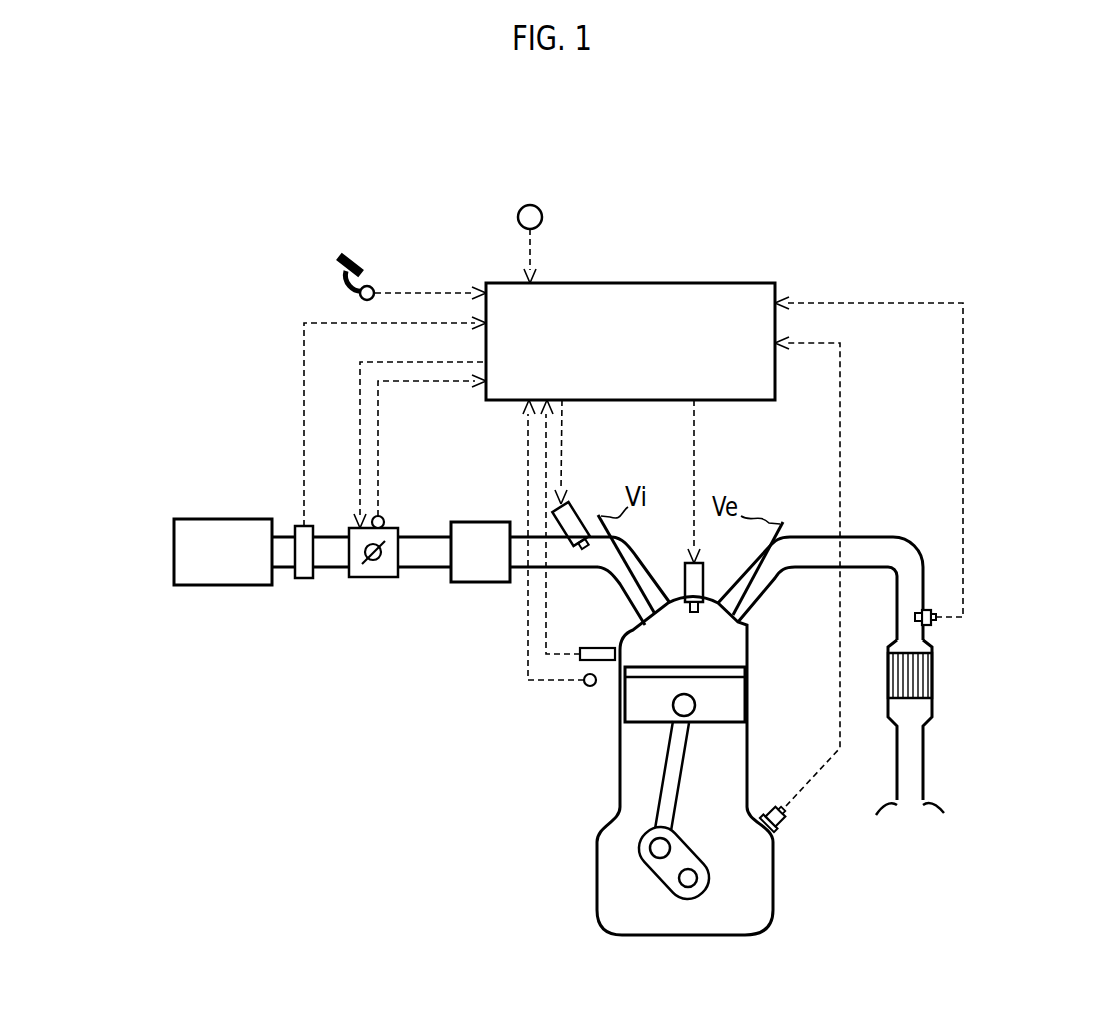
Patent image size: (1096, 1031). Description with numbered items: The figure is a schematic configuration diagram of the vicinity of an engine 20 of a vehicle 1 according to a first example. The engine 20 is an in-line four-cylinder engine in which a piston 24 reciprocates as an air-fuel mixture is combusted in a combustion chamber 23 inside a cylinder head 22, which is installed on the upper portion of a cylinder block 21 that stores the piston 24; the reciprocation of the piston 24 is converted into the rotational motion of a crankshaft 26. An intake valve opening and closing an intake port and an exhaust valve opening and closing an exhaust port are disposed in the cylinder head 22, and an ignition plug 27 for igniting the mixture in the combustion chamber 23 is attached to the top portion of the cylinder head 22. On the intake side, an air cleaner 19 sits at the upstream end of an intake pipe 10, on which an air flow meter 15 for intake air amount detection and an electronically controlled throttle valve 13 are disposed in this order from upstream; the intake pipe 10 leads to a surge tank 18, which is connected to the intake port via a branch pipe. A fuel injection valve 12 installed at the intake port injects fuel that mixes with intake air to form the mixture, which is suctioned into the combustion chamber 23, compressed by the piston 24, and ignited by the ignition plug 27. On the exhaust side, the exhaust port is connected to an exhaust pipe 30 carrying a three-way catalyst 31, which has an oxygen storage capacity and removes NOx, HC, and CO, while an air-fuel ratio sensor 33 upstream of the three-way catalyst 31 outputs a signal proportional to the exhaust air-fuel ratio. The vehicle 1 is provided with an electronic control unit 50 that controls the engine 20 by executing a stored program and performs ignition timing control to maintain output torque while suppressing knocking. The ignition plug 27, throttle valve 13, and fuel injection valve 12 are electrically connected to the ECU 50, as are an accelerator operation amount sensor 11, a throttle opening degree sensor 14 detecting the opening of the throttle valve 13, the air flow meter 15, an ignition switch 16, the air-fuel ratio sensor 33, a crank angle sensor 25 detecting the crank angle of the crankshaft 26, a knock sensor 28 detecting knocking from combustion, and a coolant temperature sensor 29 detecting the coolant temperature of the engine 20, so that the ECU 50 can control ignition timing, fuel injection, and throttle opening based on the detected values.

The vehicle 1 is at (974, 287).
The intake pipe 10 is at (441, 537).
The accelerator operation amount sensor 11 is at (375, 288).
The fuel injection valve 12 is at (582, 505).
The throttle valve 13 is at (383, 578).
The throttle opening degree sensor 14 is at (382, 517).
The air flow meter 15 is at (304, 579).
The ignition switch 16 is at (543, 217).
The surge tank 18 is at (470, 522).
The air cleaner 19 is at (221, 519).
The engine 20 is at (585, 777).
The cylinder block 21 is at (612, 868).
The cylinder head 22 is at (750, 632).
The combustion chamber 23 is at (717, 653).
The piston 24 is at (748, 715).
The crank angle sensor 25 is at (785, 831).
The crankshaft 26 is at (688, 886).
The ignition plug 27 is at (706, 576).
The knock sensor 28 is at (590, 648).
The coolant temperature sensor 29 is at (591, 688).
The exhaust pipe 30 is at (872, 536).
The three-way catalyst 31 is at (932, 672).
The air-fuel ratio sensor 33 is at (932, 609).
The electronic control unit (ECU) 50 is at (776, 283).